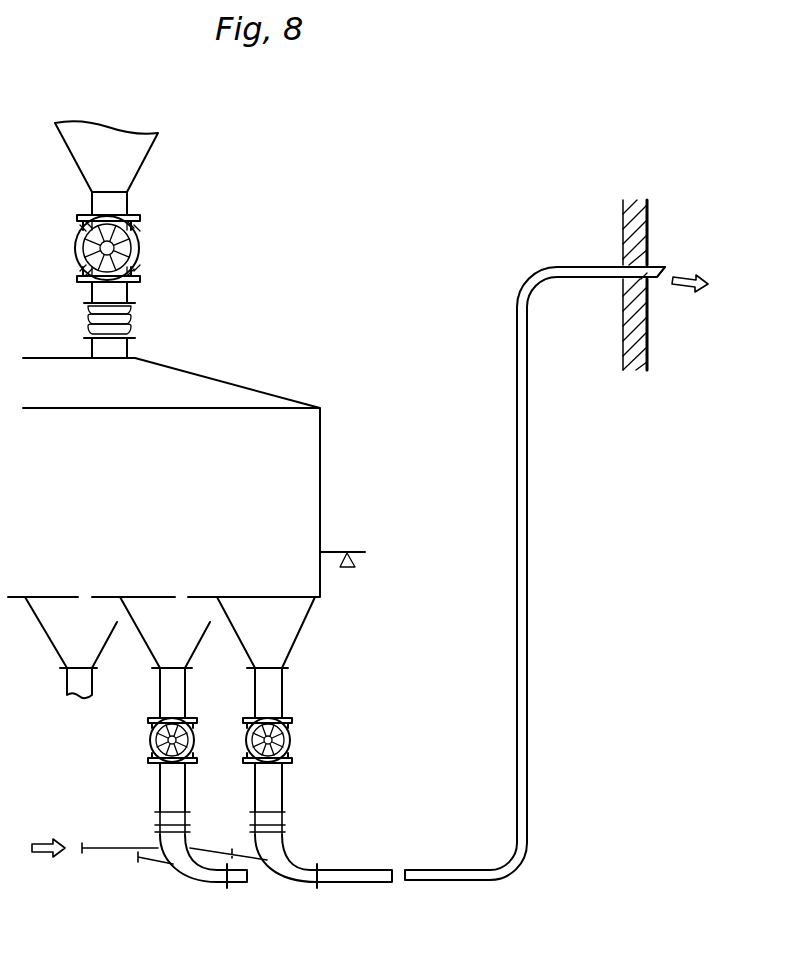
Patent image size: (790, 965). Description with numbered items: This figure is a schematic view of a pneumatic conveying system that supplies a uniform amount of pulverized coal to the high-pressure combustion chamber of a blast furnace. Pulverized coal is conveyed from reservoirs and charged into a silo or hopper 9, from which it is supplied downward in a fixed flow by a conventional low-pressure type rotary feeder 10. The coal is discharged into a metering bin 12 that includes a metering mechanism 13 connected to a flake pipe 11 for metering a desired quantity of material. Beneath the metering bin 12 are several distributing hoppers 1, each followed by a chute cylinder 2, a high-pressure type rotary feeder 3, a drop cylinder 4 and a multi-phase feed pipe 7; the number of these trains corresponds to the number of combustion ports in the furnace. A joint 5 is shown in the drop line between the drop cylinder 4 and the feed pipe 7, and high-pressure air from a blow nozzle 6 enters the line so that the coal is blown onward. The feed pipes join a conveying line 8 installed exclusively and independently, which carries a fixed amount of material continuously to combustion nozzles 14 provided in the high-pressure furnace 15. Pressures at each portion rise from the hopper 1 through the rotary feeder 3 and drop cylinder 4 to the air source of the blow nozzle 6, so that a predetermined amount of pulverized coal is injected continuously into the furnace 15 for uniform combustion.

The hopper 1 is at (297, 637).
The chute cylinder 2 is at (284, 700).
The high-pressure type rotary feeder 3 is at (292, 740).
The drop cylinder 4 is at (283, 784).
The joint 5 is at (283, 821).
The blow nozzle 6 is at (265, 862).
The multi-phase feed pipe 7 is at (305, 858).
The conveying line 8 is at (440, 870).
The silo or hopper 9 is at (147, 156).
The low-pressure type rotary feeder 10 is at (140, 246).
The flake pipe 11 is at (133, 320).
The metering bin 12 is at (278, 418).
The metering mechanism 13 is at (356, 562).
The combustion nozzle 14 is at (653, 273).
The high-pressure furnace 15 is at (642, 342).